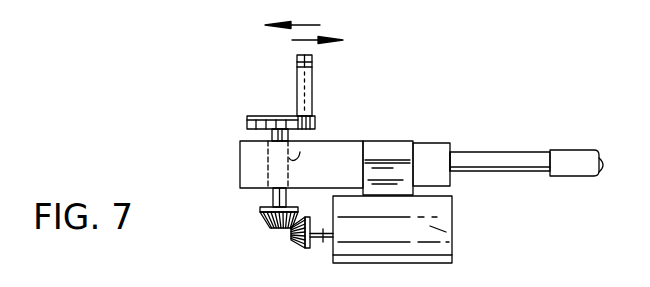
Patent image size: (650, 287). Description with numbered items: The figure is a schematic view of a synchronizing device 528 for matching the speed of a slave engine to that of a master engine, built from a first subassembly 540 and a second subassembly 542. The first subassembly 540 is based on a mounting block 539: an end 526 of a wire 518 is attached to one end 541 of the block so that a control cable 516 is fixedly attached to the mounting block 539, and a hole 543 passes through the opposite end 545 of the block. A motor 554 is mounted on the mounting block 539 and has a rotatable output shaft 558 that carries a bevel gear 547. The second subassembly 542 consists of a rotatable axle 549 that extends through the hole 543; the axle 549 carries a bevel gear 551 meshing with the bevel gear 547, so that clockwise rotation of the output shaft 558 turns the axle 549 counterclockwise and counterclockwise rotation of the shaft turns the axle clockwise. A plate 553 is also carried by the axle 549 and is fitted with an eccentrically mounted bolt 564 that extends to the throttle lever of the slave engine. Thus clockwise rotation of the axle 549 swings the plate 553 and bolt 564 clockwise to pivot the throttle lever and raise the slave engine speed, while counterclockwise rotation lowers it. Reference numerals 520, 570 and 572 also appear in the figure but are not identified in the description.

The control cable 516 is at (555, 176).
The wire 518 is at (516, 160).
The end cap 520 is at (566, 160).
The end 526 is at (456, 160).
The synchronizing device 528 is at (470, 225).
The mounting block 539 is at (430, 155).
The first subassembly 540 is at (422, 133).
The one end 541 is at (454, 156).
The second subassembly 542 is at (238, 126).
The hole 543 is at (300, 152).
The opposite end 545 is at (240, 158).
The bevel gear 547 is at (295, 243).
The rotatable axle 549 is at (277, 195).
The bevel gear 551 is at (260, 218).
The plate 553 is at (287, 115).
The motor 554 is at (436, 229).
The rotatable output shaft 558 is at (320, 238).
The eccentrically mounted bolt 564 is at (313, 86).
The direction arrow 570 is at (292, 40).
The direction arrow 572 is at (305, 25).